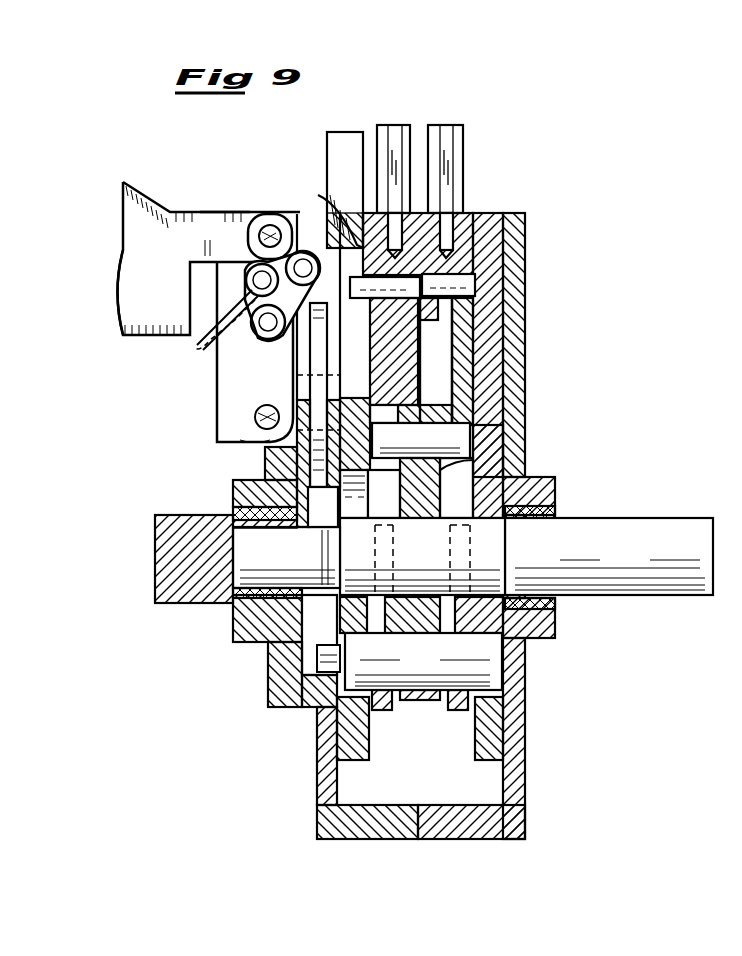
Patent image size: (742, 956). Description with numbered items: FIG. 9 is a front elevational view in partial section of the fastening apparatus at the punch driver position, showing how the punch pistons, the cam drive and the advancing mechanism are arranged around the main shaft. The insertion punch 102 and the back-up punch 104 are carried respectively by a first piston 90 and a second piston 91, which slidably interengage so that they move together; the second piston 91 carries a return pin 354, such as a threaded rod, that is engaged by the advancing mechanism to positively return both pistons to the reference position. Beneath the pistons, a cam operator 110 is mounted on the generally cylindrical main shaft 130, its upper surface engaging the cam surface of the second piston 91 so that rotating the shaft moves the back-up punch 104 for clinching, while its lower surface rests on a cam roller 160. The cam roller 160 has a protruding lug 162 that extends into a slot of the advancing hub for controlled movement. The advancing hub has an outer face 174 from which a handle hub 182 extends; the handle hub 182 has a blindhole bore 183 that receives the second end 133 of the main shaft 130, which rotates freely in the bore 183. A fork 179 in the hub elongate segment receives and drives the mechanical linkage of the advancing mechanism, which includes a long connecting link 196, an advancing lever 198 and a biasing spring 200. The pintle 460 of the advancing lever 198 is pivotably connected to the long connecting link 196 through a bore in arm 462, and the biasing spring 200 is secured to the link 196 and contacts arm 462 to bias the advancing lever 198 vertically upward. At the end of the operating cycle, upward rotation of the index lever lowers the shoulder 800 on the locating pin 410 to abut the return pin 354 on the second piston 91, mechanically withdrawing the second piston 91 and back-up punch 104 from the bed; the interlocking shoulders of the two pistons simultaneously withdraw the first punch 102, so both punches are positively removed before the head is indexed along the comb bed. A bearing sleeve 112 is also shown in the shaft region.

The first piston 90 is at (448, 366).
The second piston 91 is at (420, 372).
The insertion punch 102 is at (464, 144).
The back-up punch 104 is at (380, 137).
The cam operator 110 is at (455, 491).
The bearing sleeve 112 is at (470, 440).
The main shaft 130 is at (655, 517).
The second end 133 is at (250, 545).
The cam roller 160 is at (502, 661).
The lug 162 is at (310, 671).
The outer face 174 is at (305, 641).
The fork 179 is at (266, 459).
The handle hub 182 is at (200, 515).
The blindhole bore 183 is at (235, 605).
The long connecting link 196 is at (240, 366).
The advancing lever 198 is at (128, 291).
The biasing spring 200 is at (200, 346).
The return pin 354 is at (338, 208).
The locating pin 410 is at (327, 154).
The pintle 460 is at (126, 185).
The arm 462 is at (195, 214).
The shoulder 800 is at (325, 214).